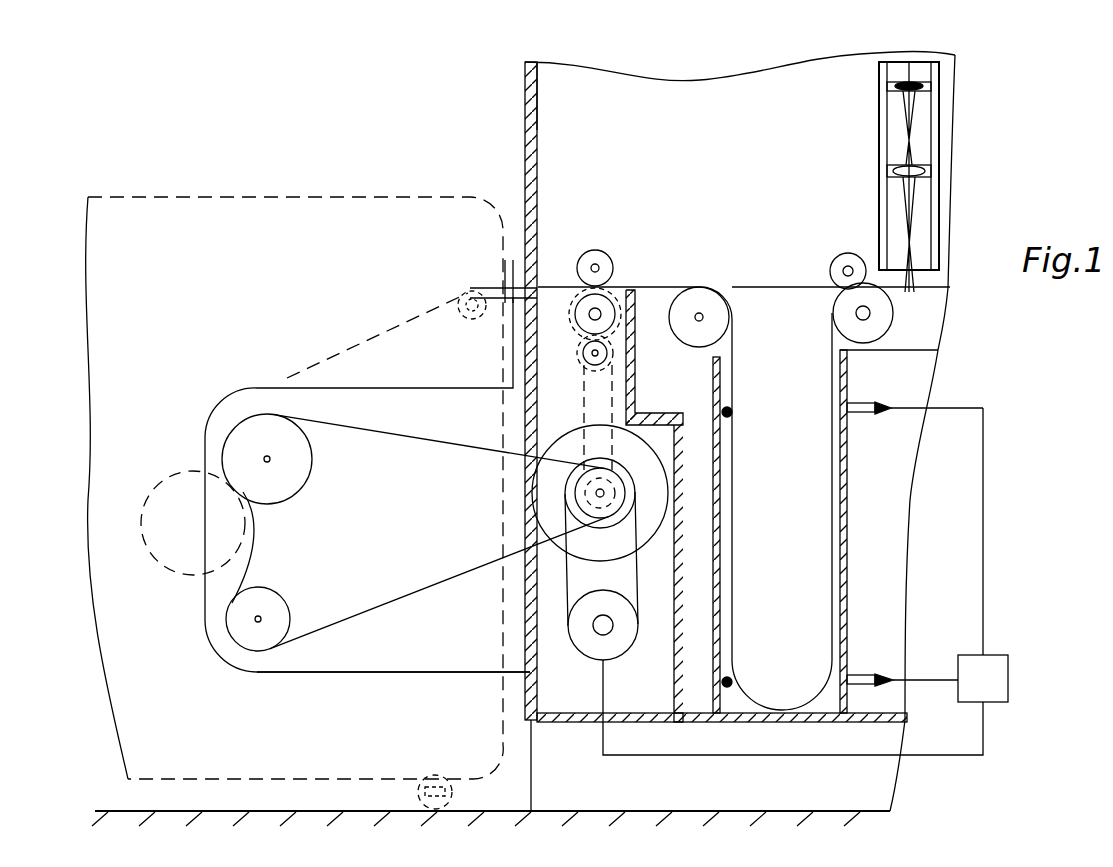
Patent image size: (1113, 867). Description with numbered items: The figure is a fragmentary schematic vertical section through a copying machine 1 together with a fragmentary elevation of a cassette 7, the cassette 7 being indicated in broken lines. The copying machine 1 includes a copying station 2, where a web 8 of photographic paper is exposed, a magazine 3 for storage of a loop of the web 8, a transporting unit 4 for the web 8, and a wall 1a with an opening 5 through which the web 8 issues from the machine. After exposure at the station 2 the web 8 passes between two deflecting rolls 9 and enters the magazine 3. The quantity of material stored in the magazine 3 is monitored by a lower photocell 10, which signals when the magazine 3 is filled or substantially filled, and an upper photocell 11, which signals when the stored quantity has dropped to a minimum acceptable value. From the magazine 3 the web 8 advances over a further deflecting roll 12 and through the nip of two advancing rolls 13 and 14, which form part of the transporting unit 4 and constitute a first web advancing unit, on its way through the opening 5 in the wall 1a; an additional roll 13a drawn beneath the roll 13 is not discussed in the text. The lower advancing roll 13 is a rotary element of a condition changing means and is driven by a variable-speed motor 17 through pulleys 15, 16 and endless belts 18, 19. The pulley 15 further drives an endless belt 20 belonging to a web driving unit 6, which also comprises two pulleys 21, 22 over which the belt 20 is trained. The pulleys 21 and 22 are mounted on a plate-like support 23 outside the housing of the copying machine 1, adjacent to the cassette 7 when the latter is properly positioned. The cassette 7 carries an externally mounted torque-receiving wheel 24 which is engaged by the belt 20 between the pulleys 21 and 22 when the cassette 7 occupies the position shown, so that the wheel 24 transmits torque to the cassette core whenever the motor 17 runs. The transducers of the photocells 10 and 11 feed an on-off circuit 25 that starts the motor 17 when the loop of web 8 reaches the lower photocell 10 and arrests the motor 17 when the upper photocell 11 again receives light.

The copying machine 1 is at (557, 150).
The wall 1a is at (538, 95).
The copying station 2 is at (890, 153).
The magazine 3 is at (828, 580).
The transporting unit 4 is at (607, 230).
The opening 5 is at (538, 290).
The web driving unit 6 is at (368, 365).
The cassette 7 is at (410, 222).
The web 8 is at (945, 288).
The deflecting rolls 9 is at (830, 270).
The lower photocell 10 is at (877, 683).
The upper photocell 11 is at (871, 405).
The deflecting roll 12 is at (716, 296).
The lower advancing roll 13 is at (576, 308).
The auxiliary roller 13a is at (583, 350).
The advancing roll 14 is at (612, 270).
The pulley 15 is at (638, 534).
The pulley 16 is at (578, 357).
The variable-speed motor 17 is at (622, 640).
The endless belt 18 is at (582, 403).
The endless belt 19 is at (637, 580).
The endless belt 20 is at (503, 447).
The pulley 21 is at (303, 466).
The pulley 22 is at (265, 601).
The plate-like support 23 is at (326, 658).
The torque-receiving wheel 24 is at (184, 571).
The on-off circuit 25 is at (1008, 666).